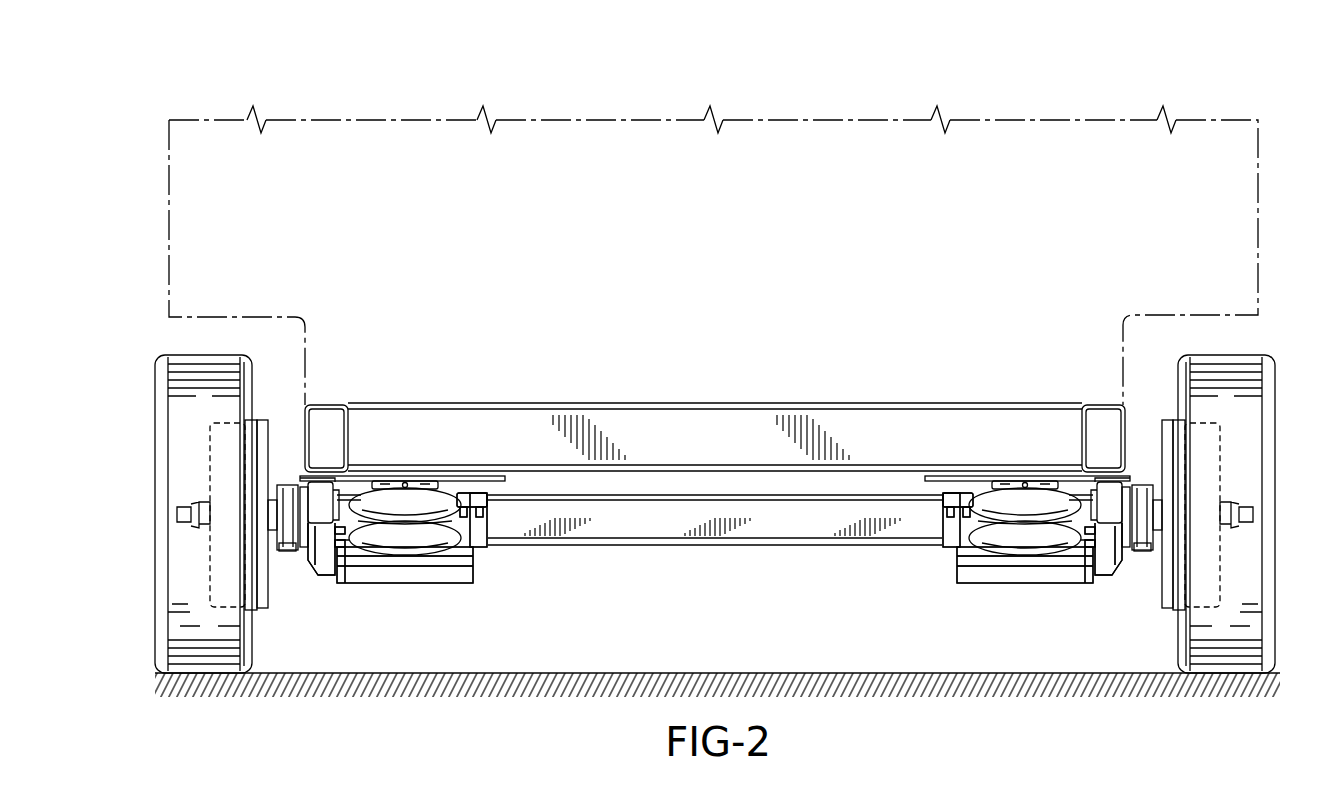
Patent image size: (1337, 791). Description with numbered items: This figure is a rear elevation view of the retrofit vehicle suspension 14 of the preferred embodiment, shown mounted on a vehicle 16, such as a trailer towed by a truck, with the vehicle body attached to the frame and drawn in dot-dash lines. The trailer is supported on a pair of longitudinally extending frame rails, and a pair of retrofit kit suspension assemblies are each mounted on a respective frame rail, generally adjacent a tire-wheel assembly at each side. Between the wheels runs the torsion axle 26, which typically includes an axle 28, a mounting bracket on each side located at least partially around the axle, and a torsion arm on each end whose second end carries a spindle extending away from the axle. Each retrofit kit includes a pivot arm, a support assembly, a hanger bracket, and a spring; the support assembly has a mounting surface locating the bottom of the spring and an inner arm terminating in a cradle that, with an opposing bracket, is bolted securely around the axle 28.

The vehicle suspension 14 is at (735, 614).
The vehicle 16 is at (160, 130).
The torsion axle 26 is at (658, 549).
The axle 28 is at (716, 506).